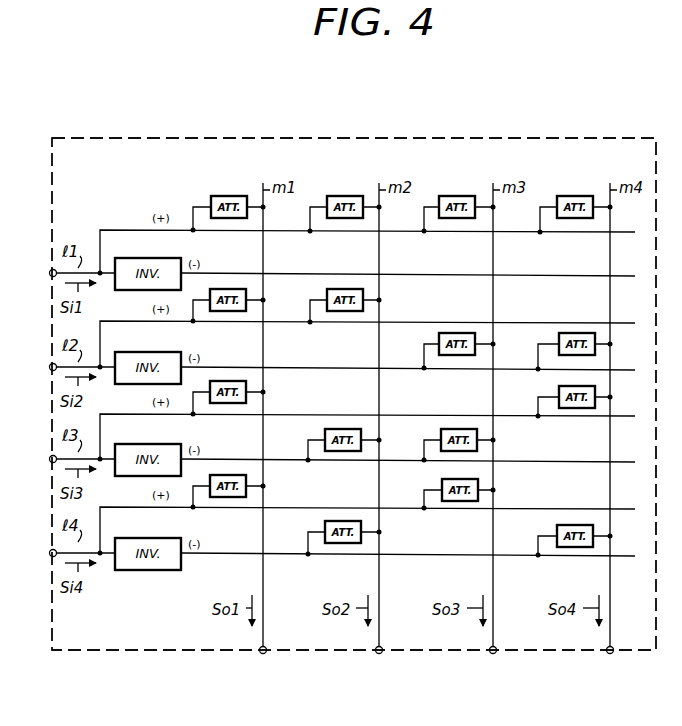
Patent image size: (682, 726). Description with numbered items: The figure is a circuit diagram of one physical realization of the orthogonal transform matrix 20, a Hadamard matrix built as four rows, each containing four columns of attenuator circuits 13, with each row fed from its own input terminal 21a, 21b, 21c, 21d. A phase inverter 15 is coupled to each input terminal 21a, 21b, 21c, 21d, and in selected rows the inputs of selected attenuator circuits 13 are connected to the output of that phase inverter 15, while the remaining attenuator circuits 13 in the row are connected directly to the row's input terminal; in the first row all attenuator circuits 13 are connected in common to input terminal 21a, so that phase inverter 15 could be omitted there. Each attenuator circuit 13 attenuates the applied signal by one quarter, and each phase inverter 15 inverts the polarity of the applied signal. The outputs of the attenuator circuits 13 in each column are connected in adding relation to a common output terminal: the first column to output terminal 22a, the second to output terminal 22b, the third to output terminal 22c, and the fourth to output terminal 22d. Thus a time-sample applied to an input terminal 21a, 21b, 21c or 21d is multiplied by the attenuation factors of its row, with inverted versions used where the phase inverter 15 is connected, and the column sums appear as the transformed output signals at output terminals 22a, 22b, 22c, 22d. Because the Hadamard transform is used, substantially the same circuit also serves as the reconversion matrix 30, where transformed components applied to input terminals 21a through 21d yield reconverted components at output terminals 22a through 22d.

The attenuator circuit 13 is at (233, 196).
The phase inverter 15 is at (164, 259).
The orthogonal transform matrix 20 is at (343, 137).
The reconversion matrix 30 is at (354, 374).
The input terminal 21a is at (49, 273).
The input terminal 21b is at (49, 367).
The input terminal 21c is at (49, 459).
The input terminal 21d is at (49, 553).
The output terminal 22a is at (261, 655).
The output terminal 22b is at (377, 655).
The output terminal 22c is at (491, 655).
The output terminal 22d is at (608, 655).